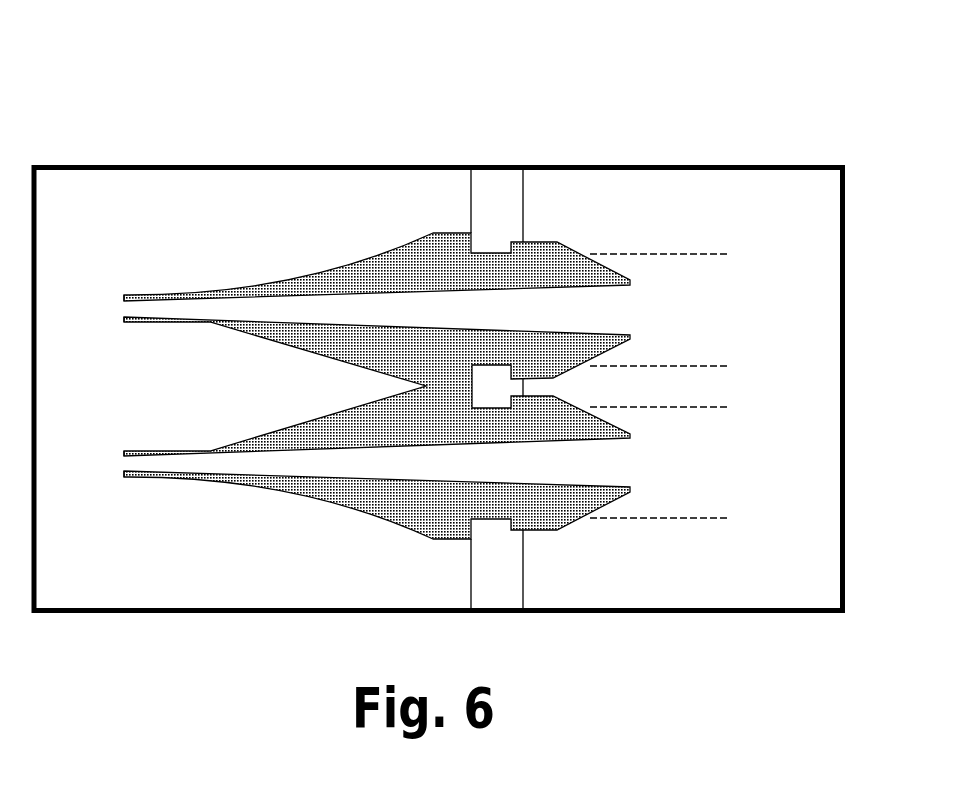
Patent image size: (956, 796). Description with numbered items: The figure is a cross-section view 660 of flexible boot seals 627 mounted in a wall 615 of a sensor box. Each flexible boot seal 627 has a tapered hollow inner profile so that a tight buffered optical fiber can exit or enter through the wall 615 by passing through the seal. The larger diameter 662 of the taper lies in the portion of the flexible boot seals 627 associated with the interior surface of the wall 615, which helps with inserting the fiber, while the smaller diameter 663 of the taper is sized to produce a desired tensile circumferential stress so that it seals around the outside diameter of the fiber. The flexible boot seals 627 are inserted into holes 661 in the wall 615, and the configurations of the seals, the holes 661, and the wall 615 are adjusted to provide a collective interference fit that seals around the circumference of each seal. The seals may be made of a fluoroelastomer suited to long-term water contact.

The cross-section view 660 is at (258, 110).
The holes 661 is at (712, 316).
The larger diameter 662 is at (608, 320).
The smaller diameter 663 is at (217, 310).
The flexible boot seals 627 is at (145, 324).
The wall 615 is at (498, 217).